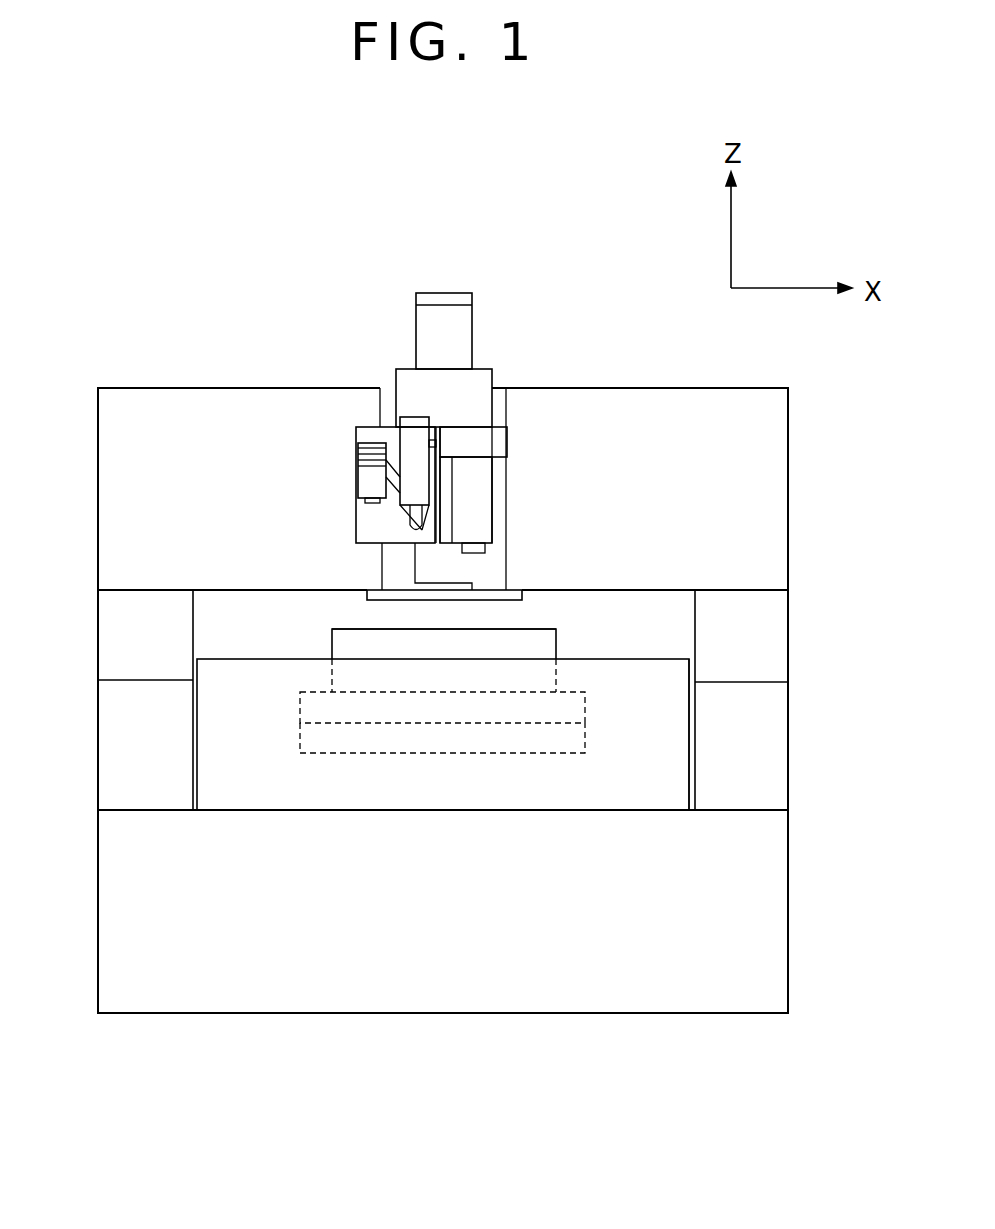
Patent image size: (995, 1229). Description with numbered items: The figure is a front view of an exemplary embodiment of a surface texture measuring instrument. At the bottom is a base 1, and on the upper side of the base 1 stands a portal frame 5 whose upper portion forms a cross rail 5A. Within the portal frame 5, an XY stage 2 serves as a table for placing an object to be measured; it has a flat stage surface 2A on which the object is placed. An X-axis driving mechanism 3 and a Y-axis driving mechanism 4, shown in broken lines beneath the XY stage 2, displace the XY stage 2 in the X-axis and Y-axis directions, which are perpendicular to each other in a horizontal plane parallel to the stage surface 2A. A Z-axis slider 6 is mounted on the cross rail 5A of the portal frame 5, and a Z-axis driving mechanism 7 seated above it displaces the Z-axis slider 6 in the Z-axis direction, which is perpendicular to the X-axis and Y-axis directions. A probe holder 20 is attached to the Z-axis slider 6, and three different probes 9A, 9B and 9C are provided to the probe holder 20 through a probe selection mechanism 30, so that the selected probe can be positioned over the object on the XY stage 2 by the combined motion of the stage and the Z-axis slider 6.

The base 1 is at (631, 1013).
The XY stage 2 is at (330, 645).
The stage surface 2A is at (537, 629).
The X-axis driving mechanism 3 is at (592, 707).
The Y-axis driving mechanism 4 is at (592, 732).
The portal frame 5 is at (97, 628).
The cross rail 5A is at (173, 387).
The Z-axis slider 6 is at (492, 380).
The Z-axis driving mechanism 7 is at (472, 327).
The probe 9A is at (367, 487).
The probe 9B is at (411, 434).
The probe 9C is at (485, 496).
The probe holder 20 is at (493, 443).
The probe selection mechanism 30 is at (332, 544).